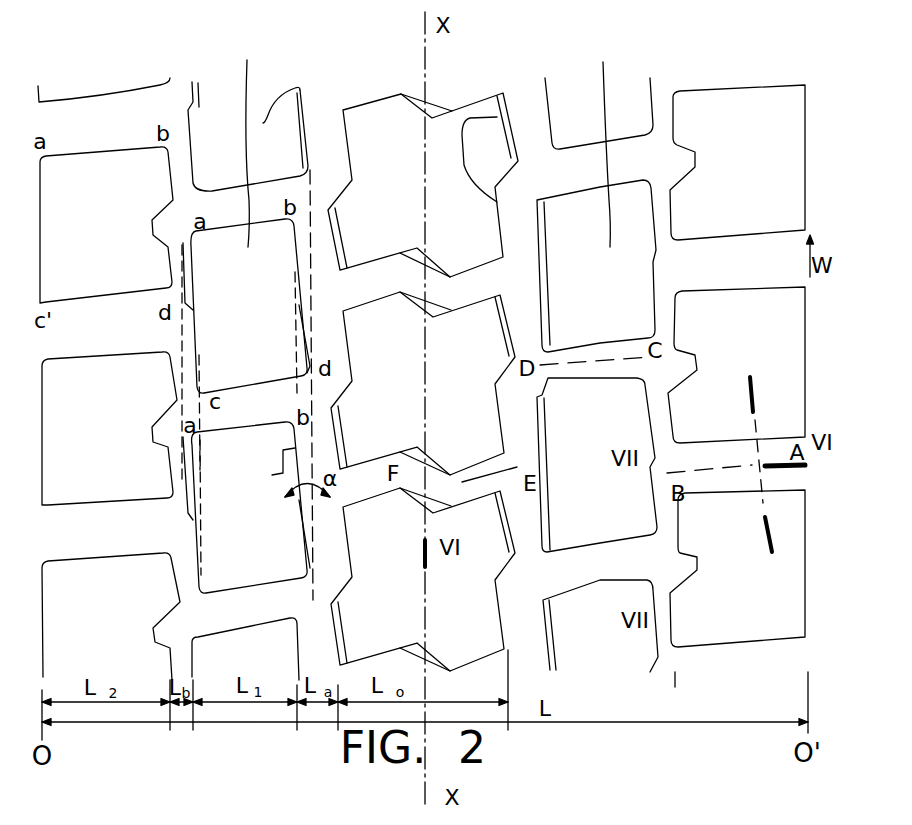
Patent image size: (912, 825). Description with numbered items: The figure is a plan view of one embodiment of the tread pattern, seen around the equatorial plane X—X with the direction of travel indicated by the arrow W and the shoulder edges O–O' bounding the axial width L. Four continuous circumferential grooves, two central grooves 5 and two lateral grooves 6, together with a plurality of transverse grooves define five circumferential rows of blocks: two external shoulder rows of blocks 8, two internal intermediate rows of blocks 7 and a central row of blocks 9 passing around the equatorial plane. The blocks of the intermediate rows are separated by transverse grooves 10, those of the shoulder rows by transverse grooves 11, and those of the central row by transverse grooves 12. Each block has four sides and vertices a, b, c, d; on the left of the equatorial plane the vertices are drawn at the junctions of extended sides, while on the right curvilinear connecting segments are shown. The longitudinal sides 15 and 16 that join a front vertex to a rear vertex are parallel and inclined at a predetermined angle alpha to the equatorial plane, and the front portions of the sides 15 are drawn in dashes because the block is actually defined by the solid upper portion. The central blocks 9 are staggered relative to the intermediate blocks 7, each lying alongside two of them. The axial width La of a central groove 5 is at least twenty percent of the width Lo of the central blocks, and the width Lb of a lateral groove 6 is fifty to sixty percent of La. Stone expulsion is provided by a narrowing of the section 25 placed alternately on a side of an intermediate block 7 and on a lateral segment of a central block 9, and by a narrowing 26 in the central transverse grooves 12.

The central circumferential groove 5 is at (327, 143).
The lateral circumferential groove 6 is at (187, 142).
The intermediate row block 7 is at (208, 110).
The shoulder row block 8 is at (70, 170).
The central row block 9 is at (398, 125).
The transverse groove of the intermediate rows 10 is at (553, 170).
The transverse groove of the shoulder rows 11 is at (97, 330).
The transverse groove of the central row 12 is at (467, 285).
The block side 15 is at (197, 355).
The block side 16 is at (263, 123).
The narrowing of the section 25 is at (495, 200).
The narrowing of the section 26 is at (408, 262).